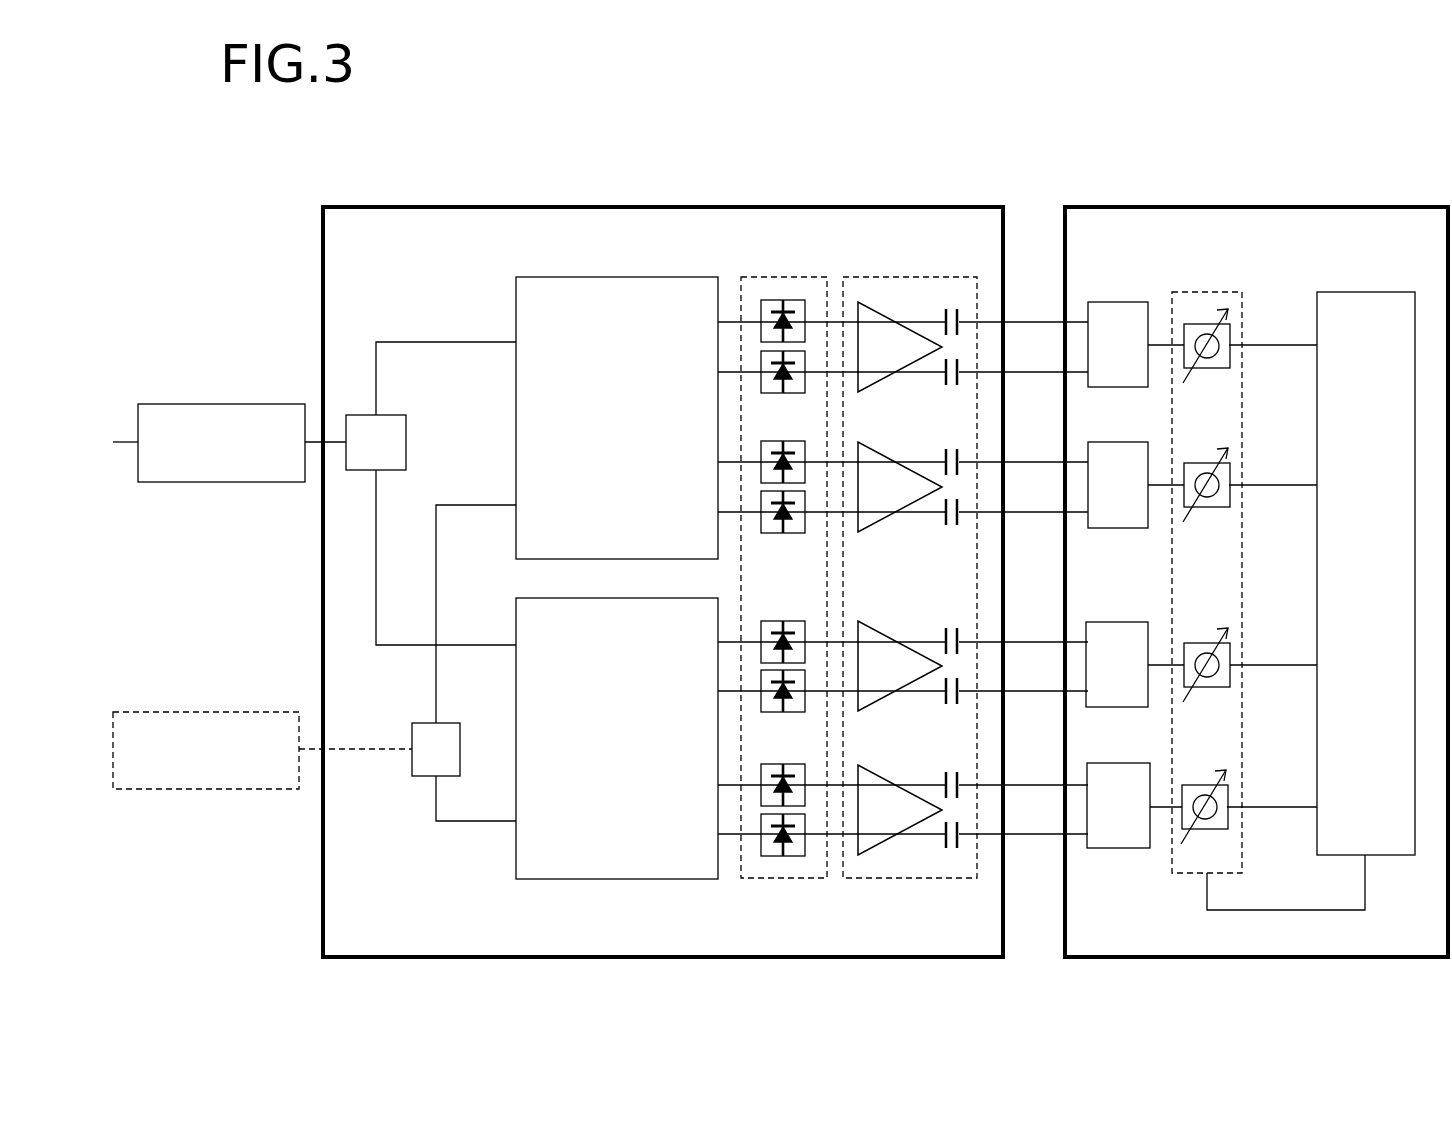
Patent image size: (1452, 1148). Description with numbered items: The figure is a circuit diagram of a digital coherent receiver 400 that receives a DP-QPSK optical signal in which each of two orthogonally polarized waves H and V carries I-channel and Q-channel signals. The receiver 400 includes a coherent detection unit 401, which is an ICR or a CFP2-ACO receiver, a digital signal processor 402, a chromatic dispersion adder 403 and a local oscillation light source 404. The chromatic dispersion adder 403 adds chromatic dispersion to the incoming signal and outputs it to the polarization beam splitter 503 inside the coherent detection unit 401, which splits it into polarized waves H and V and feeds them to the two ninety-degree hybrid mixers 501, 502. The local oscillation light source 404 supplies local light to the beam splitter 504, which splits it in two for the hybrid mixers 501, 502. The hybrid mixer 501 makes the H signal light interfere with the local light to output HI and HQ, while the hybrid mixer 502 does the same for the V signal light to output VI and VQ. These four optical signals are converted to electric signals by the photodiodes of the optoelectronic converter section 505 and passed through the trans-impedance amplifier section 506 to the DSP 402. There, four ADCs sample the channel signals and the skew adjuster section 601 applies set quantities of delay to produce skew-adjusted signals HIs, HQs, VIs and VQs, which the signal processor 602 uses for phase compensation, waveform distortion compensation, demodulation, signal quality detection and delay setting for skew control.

The digital coherent receiver 400 is at (1001, 136).
The coherent detection unit 401 is at (600, 206).
The digital signal processor 402 is at (1268, 206).
The chromatic dispersion adder 403 is at (203, 403).
The local oscillation light source 404 is at (207, 711).
The 90° hybrid mixer 501 is at (617, 276).
The 90° hybrid mixer 502 is at (575, 597).
The polarization beam splitter 503 is at (405, 414).
The beam splitter 504 is at (449, 722).
The optoelectronic converter section 505 is at (765, 276).
The trans-impedance amplifier section 506 is at (878, 276).
The skew adjuster section 601 is at (1183, 291).
The signal processor 602 is at (1362, 291).